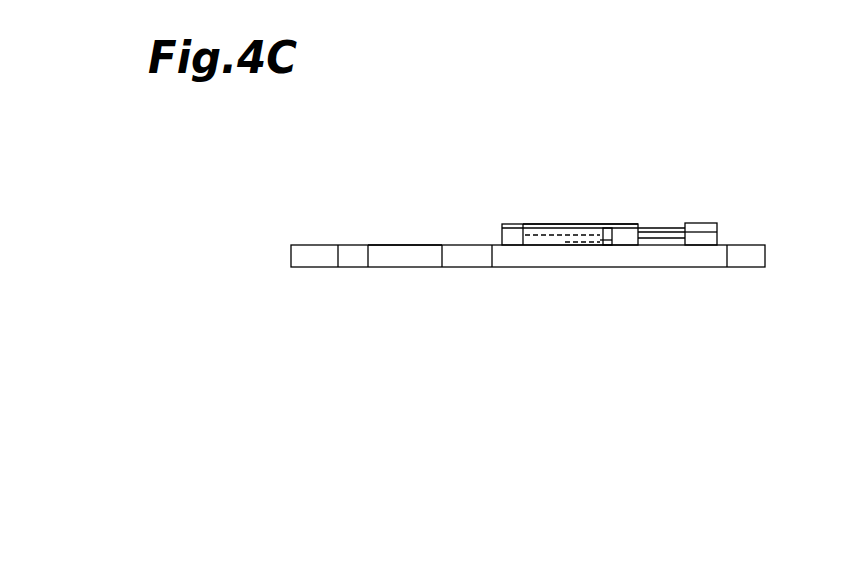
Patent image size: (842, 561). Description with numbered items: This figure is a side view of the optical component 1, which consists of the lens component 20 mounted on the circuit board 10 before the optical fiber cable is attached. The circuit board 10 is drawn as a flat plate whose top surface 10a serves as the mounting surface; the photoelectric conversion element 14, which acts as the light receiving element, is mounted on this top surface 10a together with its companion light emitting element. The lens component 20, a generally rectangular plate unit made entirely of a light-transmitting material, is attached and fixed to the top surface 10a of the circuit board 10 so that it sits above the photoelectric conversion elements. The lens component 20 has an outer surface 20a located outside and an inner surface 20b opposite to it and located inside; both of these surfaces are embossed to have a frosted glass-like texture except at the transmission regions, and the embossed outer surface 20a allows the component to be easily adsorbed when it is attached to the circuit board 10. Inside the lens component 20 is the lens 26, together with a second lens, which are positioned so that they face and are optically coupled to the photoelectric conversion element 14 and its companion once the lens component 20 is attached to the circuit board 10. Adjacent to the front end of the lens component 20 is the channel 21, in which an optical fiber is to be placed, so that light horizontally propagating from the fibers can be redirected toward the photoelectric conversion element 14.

The optical component 1 is at (720, 168).
The circuit board 10 is at (405, 267).
The top surface 10a is at (405, 245).
The photoelectric conversion element 14 is at (603, 245).
The lens component 20 is at (567, 222).
The outer surface 20a is at (513, 223).
The inner surface 20b is at (542, 221).
The channel 21 is at (655, 223).
The lens 26 is at (605, 222).